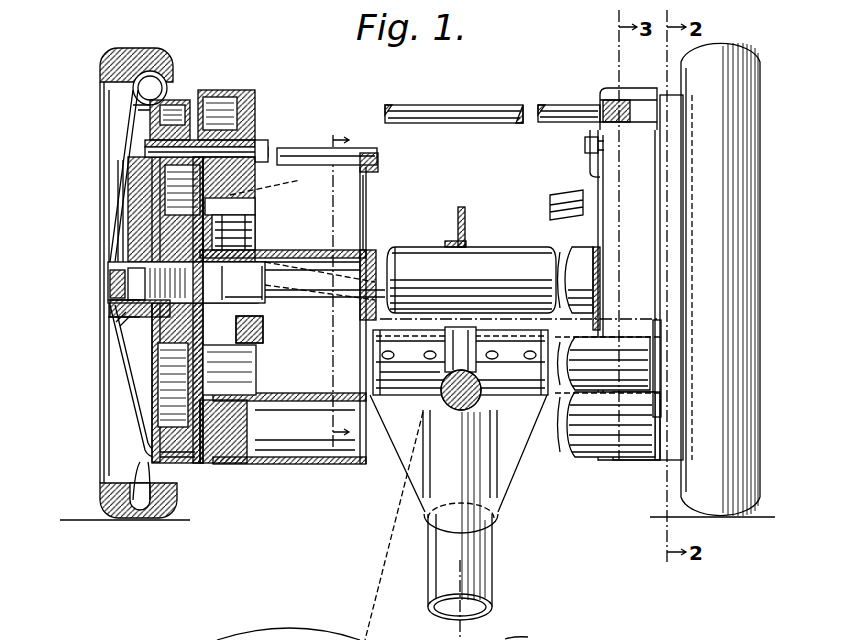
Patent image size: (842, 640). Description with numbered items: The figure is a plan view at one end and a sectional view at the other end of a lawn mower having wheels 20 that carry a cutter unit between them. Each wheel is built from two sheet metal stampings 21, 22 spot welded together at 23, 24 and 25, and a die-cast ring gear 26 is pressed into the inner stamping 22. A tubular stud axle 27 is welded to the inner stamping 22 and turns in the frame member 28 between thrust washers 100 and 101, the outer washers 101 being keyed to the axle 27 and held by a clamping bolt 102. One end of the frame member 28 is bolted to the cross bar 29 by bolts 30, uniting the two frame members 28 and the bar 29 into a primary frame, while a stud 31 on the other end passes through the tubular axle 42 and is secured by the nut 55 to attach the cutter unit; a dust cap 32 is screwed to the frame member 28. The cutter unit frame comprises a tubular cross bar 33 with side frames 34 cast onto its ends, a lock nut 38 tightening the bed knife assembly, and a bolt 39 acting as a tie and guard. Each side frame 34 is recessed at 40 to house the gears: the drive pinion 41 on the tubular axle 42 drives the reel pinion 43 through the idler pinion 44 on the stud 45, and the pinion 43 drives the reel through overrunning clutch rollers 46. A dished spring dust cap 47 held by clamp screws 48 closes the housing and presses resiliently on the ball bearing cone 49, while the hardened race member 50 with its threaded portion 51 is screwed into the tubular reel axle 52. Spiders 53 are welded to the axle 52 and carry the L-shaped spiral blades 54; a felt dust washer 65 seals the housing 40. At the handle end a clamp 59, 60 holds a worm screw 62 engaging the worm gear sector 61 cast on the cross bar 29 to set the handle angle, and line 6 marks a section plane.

The wheel 20 is at (150, 46).
The sheet metal stamping 21 is at (127, 150).
The inner stamping 22 is at (164, 84).
The spot weld 23 is at (140, 90).
The spot weld 24 is at (117, 212).
The spot weld 25 is at (128, 272).
The ring gear 26 is at (148, 127).
The tubular stud axle 27 is at (112, 290).
The frame member 28 is at (140, 192).
The cross bar 29 is at (605, 402).
The bolt 30 is at (656, 320).
The stud 31 is at (270, 150).
The dust cap 32 is at (197, 462).
The tubular cross bar 33 is at (330, 465).
The side frame 34 is at (256, 101).
The lock nut 38 is at (484, 540).
The bolt 39 is at (498, 123).
The recess 40 is at (222, 92).
The drive pinion 41 is at (155, 172).
The tubular axle 42 is at (248, 121).
The reel pinion 43 is at (238, 352).
The idler pinion 44 is at (232, 195).
The stud 45 is at (362, 186).
The overrunning clutch roller 46 is at (236, 232).
The spring dust cap 47 is at (226, 293).
The clamp screw 48 is at (240, 366).
The ball bearing cone 49 is at (225, 270).
The ball race member 50 is at (320, 300).
The threaded portion 51 is at (262, 252).
The tubular axle 52 is at (315, 255).
The spider 53 is at (368, 205).
The blade 54 is at (378, 160).
The nut 55 is at (270, 142).
The clamp 59 is at (423, 505).
The clamp 60 is at (410, 340).
The worm gear sector 61 is at (443, 360).
The worm screw 62 is at (482, 374).
The felt dust washer 65 is at (264, 330).
The thrust washer 100 is at (162, 320).
The thrust washer 101 is at (112, 320).
The clamping bolt 102 is at (124, 330).
The section line 6 is at (344, 291).